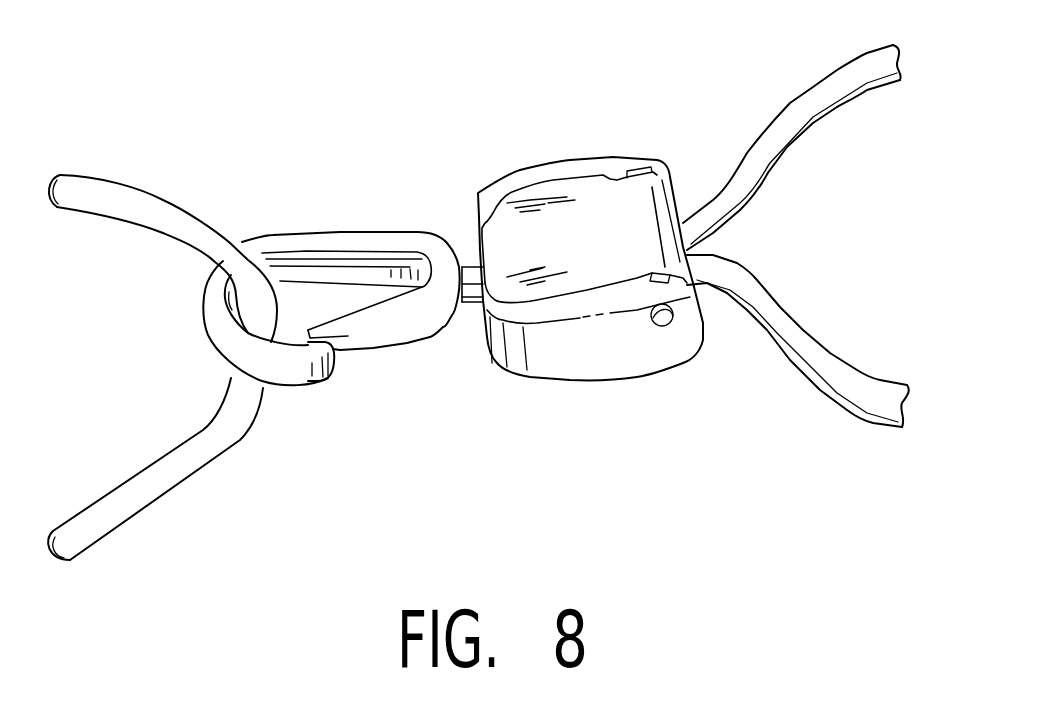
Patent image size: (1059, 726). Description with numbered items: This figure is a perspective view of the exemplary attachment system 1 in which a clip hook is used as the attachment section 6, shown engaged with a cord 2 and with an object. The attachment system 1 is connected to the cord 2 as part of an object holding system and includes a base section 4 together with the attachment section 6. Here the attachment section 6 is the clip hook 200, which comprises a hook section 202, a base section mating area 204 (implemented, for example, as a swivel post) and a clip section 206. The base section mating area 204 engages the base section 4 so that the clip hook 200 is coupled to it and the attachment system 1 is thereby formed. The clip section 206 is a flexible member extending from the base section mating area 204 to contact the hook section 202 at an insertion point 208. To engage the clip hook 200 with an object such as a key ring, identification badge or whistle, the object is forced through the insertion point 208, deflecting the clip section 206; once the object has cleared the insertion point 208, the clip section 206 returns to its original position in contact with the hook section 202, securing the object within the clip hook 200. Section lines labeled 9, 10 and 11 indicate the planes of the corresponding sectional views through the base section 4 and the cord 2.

The attachment system 1 is at (678, 500).
The cord 2 is at (803, 98).
The base section 4 is at (603, 380).
The attachment section 6 is at (263, 230).
The section line 9 is at (533, 139).
The section line 10 is at (622, 68).
The section line 11 is at (118, 275).
The clip hook 200 is at (338, 230).
The hook section 202 is at (275, 397).
The base section mating area 204 is at (470, 260).
The clip section 206 is at (405, 348).
The insertion point 208 is at (332, 357).